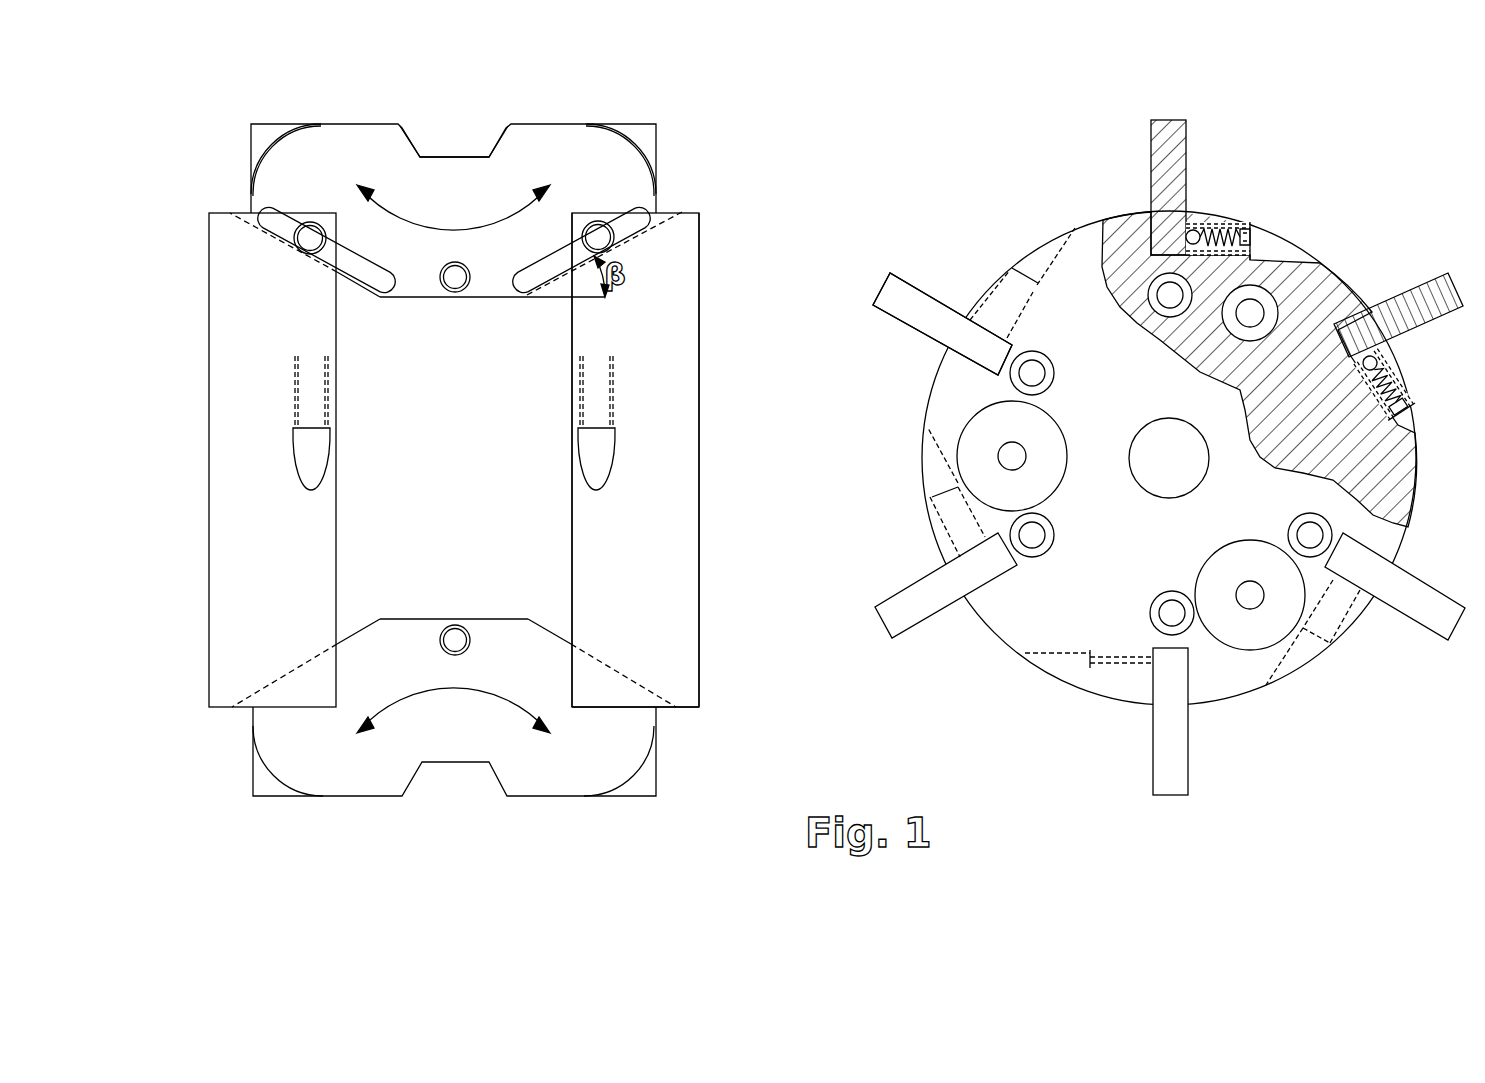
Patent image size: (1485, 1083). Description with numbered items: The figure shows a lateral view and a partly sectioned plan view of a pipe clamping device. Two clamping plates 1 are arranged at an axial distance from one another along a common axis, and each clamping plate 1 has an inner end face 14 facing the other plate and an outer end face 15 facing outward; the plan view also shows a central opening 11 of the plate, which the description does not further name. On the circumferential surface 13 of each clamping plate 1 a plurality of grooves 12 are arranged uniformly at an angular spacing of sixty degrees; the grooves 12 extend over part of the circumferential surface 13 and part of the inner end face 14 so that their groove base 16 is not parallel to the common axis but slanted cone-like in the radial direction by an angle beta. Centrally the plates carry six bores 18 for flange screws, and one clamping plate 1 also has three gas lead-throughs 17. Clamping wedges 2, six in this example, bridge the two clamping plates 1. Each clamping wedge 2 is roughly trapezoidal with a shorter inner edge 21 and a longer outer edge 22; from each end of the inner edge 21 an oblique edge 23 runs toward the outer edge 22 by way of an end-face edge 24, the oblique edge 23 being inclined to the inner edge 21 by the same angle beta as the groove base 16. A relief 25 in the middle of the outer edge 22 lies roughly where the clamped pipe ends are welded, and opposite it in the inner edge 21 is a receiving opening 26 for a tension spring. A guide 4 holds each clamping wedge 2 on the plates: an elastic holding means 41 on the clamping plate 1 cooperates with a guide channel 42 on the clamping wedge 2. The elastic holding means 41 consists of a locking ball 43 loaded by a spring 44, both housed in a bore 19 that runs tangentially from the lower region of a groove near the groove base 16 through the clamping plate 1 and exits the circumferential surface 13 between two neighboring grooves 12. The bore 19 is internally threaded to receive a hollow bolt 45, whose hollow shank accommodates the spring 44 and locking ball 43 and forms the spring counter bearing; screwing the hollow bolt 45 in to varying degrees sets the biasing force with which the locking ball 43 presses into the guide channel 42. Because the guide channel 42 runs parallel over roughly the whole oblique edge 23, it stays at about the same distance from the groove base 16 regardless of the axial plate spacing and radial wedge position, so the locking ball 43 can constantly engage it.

The clamping plate 1 is at (232, 615).
The clamping wedge 2 is at (265, 145).
The guide 4 is at (616, 236).
The central bore 11 is at (1140, 490).
The groove 12 is at (962, 350).
The circumferential surface 13 is at (690, 708).
The inner end face 14 is at (575, 540).
The outer end face 15 is at (700, 437).
The groove base 16 is at (985, 372).
The gas lead-through 17 is at (968, 455).
The bore for flange screws 18 is at (1025, 558).
The bore 19 is at (1150, 733).
The inner edge 21 is at (422, 298).
The outer edge 22 is at (300, 124).
The oblique edge 23 is at (370, 290).
The end-face edge 24 is at (657, 135).
The relief 25 is at (417, 124).
The receiving opening 26 is at (452, 626).
The elastic holding means 41 is at (1268, 185).
The guide channel 42 is at (522, 292).
The locking ball 43 is at (1199, 232).
The spring 44 is at (1238, 237).
The hollow bolt 45 is at (1253, 247).